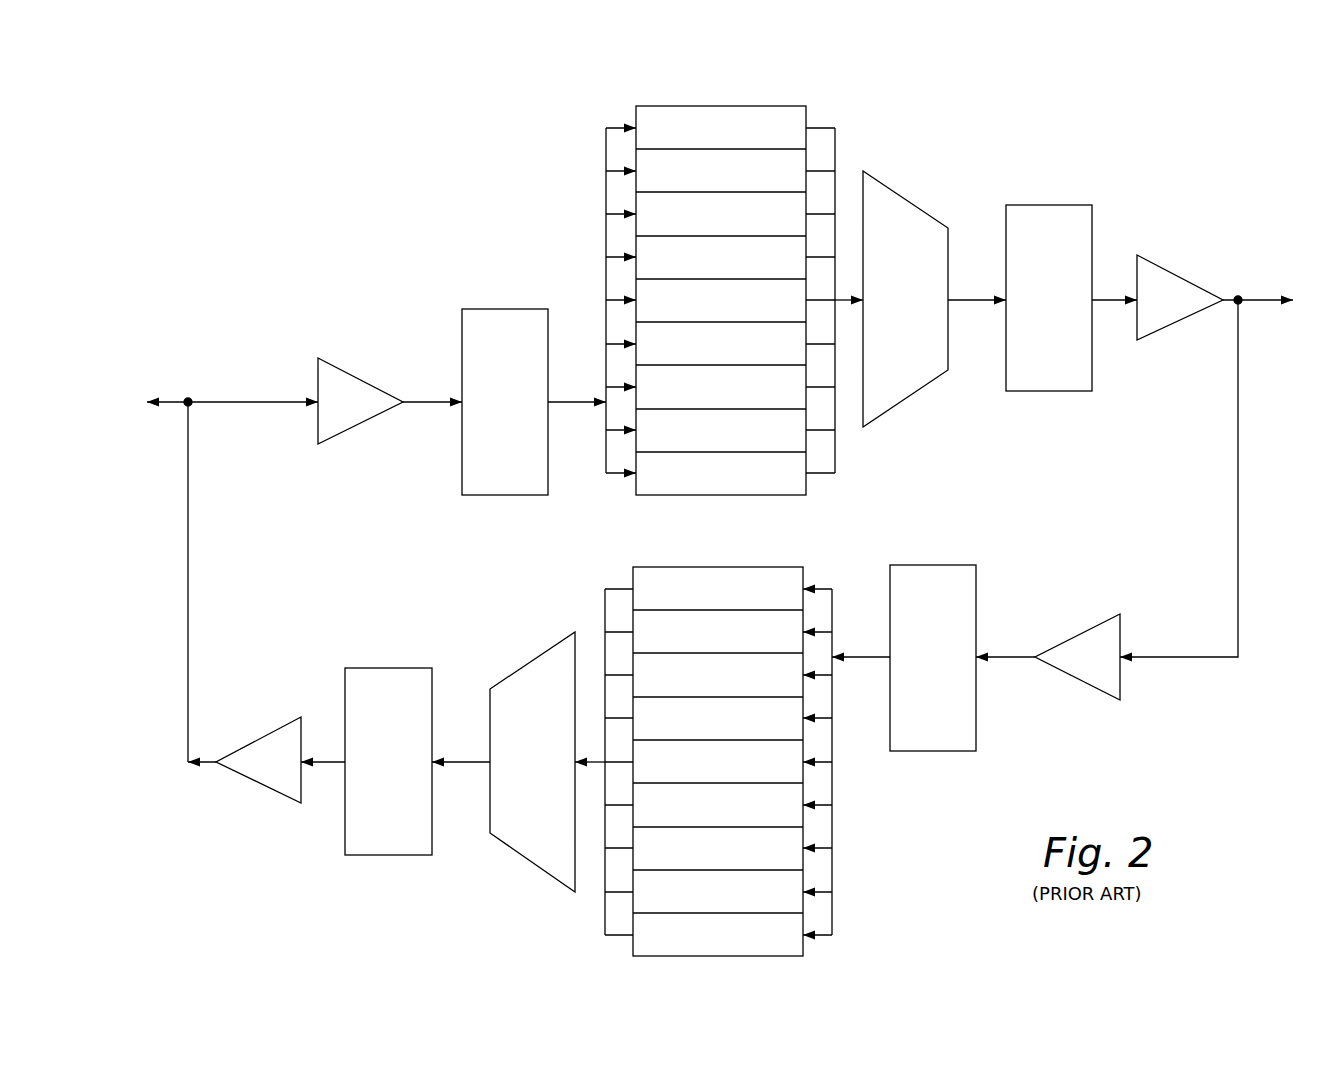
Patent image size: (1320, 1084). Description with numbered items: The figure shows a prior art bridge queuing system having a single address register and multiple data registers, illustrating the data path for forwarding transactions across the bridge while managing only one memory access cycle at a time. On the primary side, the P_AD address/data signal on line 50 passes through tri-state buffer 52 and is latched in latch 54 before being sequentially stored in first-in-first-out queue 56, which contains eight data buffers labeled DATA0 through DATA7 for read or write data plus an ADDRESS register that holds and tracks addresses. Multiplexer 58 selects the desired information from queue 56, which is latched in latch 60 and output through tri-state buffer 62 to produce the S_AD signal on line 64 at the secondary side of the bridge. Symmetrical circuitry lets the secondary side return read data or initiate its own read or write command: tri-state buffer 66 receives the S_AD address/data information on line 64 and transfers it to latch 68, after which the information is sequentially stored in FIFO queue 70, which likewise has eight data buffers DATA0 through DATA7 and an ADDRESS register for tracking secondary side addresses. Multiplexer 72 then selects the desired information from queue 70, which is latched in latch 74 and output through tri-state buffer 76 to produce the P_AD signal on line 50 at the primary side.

The line 50 is at (217, 404).
The tri-state buffer 52 is at (347, 372).
The latch 54 is at (505, 308).
The first-in-first-out (FIFO) queue 56 is at (722, 106).
The multiplexer 58 is at (907, 197).
The latch 60 is at (1050, 204).
The tri-state buffer 62 is at (1187, 279).
The line 64 is at (1258, 303).
The tri-state buffer 66 is at (1092, 690).
The latch 68 is at (932, 565).
The FIFO queue 70 is at (718, 566).
The multiplexer 72 is at (535, 664).
The latch 74 is at (388, 667).
The tri-state buffer 76 is at (276, 734).